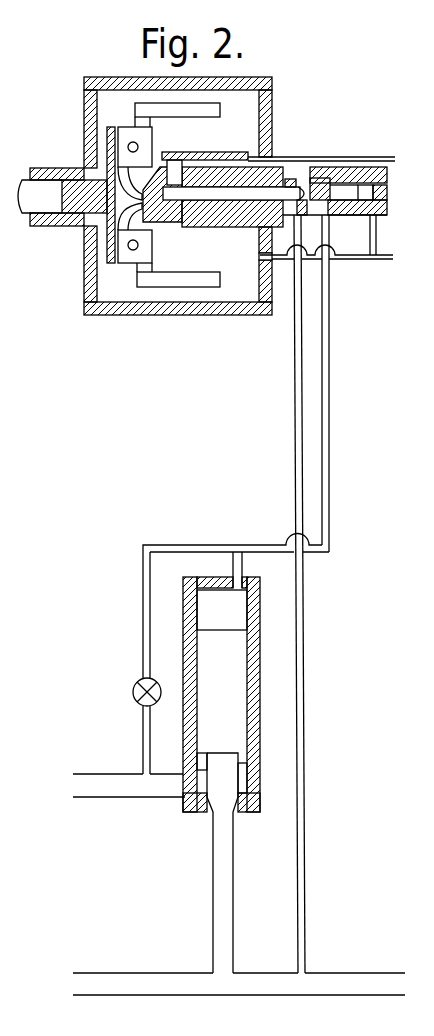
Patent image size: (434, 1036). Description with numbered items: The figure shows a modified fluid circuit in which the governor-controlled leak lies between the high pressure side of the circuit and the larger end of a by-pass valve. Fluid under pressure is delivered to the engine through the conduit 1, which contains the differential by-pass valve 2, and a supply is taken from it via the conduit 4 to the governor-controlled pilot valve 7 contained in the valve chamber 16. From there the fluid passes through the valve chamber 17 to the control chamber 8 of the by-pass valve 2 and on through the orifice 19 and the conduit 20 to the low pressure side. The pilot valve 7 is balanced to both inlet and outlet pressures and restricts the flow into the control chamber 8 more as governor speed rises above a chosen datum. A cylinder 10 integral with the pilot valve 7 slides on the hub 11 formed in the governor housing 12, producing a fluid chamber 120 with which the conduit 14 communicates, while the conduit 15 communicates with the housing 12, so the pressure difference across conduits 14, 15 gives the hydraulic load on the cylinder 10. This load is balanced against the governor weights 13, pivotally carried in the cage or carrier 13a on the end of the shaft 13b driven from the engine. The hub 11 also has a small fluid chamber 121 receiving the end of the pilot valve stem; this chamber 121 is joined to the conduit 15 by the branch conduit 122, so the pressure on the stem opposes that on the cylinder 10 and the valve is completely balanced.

The conduit 1 is at (132, 987).
The differential by-pass valve 2 is at (220, 778).
The conduit 4 is at (306, 732).
The governor-operated pilot valve 7 is at (218, 192).
The valve control chamber 8 is at (217, 607).
The cylinder 10 is at (238, 152).
The hub 11 is at (235, 222).
The governor housing 12 is at (264, 82).
The governor weights 13 is at (145, 109).
The cage or carrier 13a is at (110, 250).
The shaft 13b is at (25, 186).
The conduit 14 is at (347, 160).
The conduit 15 is at (383, 254).
The valve chamber 16 is at (295, 178).
The valve chamber 17 is at (318, 182).
The orifice 19 is at (133, 692).
The conduit 20 is at (325, 443).
The fluid chamber 120 is at (177, 168).
The small fluid chamber 121 is at (370, 188).
The branch conduit 122 is at (372, 231).